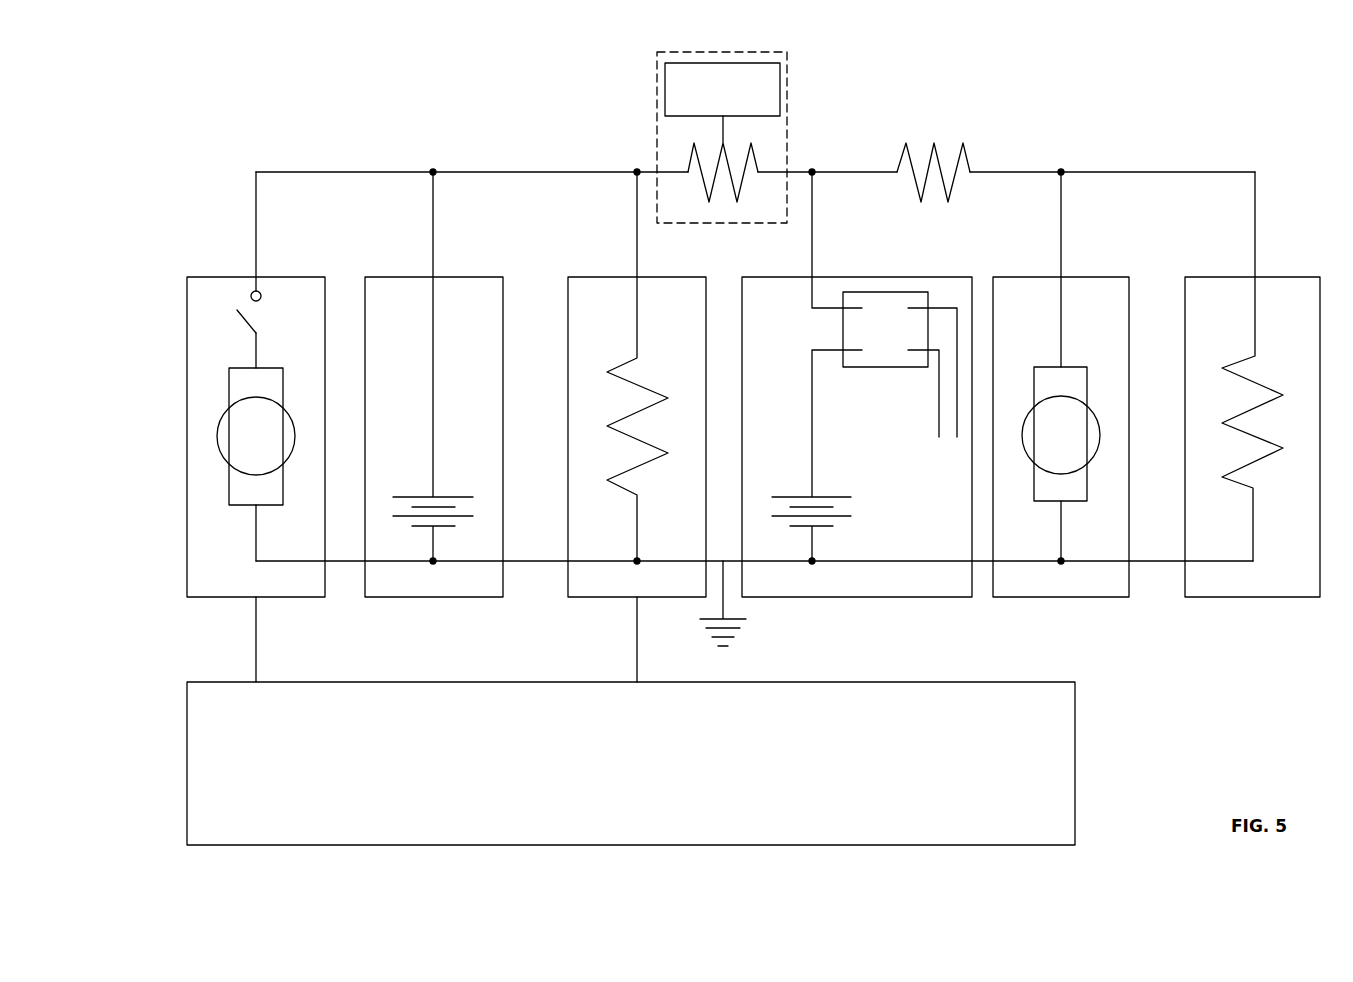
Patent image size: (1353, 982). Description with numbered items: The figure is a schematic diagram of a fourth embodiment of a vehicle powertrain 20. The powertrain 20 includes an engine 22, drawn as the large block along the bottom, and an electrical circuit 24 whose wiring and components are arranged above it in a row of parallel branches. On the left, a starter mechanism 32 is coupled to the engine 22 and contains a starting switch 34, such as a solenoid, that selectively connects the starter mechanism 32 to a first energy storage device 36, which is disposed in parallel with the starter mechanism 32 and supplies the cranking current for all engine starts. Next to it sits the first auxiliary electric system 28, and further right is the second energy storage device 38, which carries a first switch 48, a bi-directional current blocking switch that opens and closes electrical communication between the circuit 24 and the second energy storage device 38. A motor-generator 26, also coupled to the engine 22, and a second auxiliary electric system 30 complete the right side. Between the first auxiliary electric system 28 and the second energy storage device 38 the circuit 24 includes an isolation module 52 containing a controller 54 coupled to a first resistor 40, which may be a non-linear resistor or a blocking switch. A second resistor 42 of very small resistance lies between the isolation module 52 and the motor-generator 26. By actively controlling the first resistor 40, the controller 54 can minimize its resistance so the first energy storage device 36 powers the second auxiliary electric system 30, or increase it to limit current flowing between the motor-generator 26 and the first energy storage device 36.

The powertrain 20 is at (777, 356).
The engine 22 is at (978, 845).
The electrical circuit 24 is at (1222, 172).
The motor-generator 26 is at (1095, 277).
The first auxiliary electric system 28 is at (670, 277).
The second auxiliary electric system 30 is at (1253, 597).
The starter mechanism 32 is at (248, 427).
The starting switch 34 is at (247, 322).
The first energy storage device 36 is at (470, 277).
The second energy storage device 38 is at (857, 384).
The first resistor 40 is at (758, 165).
The second resistor 42 is at (950, 135).
The first switch 48 is at (910, 292).
The isolation module 52 is at (753, 137).
The controller 54 is at (780, 80).